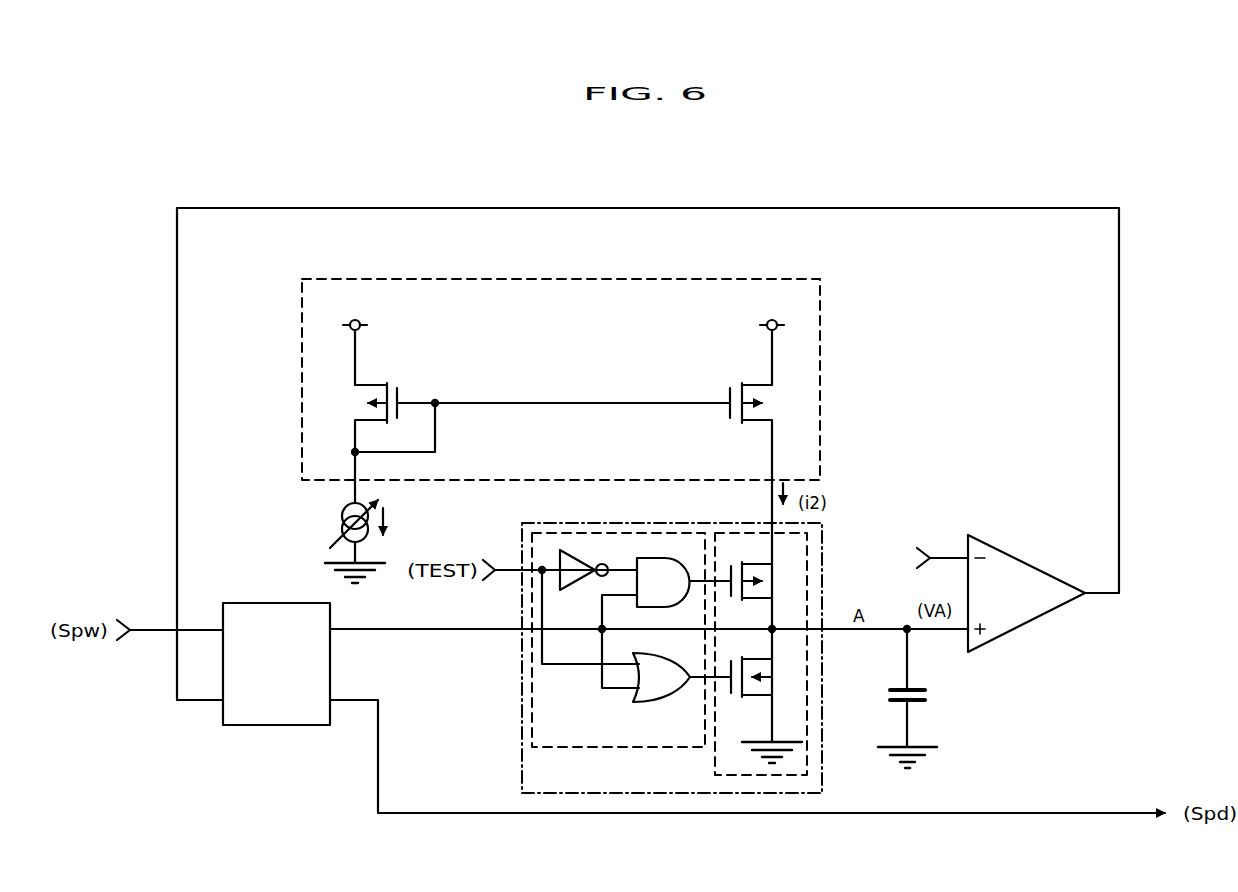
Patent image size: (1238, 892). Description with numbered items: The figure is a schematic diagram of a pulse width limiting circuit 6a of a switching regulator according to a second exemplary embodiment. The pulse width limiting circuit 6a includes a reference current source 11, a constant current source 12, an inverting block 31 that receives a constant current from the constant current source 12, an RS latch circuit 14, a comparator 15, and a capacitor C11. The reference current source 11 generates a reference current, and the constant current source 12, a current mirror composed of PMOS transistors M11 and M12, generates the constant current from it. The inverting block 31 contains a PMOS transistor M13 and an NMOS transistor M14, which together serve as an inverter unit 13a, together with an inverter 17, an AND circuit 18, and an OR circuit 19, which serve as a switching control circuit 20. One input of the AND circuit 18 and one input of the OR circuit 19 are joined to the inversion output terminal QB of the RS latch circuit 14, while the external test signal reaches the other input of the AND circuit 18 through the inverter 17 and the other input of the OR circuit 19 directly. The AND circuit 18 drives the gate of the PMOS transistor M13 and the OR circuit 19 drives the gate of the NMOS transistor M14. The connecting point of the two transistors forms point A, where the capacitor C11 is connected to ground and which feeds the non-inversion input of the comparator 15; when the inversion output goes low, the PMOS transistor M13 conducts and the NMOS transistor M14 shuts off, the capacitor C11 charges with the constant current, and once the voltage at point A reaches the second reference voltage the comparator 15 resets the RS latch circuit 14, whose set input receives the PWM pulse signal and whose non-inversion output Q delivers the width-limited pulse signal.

The pulse width limiting circuit 6a is at (978, 176).
The reference current source 11 is at (343, 511).
The constant current source 12 is at (566, 401).
The inverter unit 13a is at (795, 654).
The RS latch circuit 14 is at (246, 601).
The comparator 15 is at (1018, 558).
The inverter 17 is at (590, 559).
The AND circuit 18 is at (672, 608).
The OR circuit 19 is at (668, 703).
The switching control circuit 20 is at (676, 658).
The inverting block 31 is at (604, 640).
The PMOS transistor M11 is at (531, 399).
The PMOS transistor M12 is at (757, 430).
The PMOS transistor M13 is at (748, 570).
The NMOS transistor M14 is at (763, 663).
The capacitor C11 is at (922, 698).